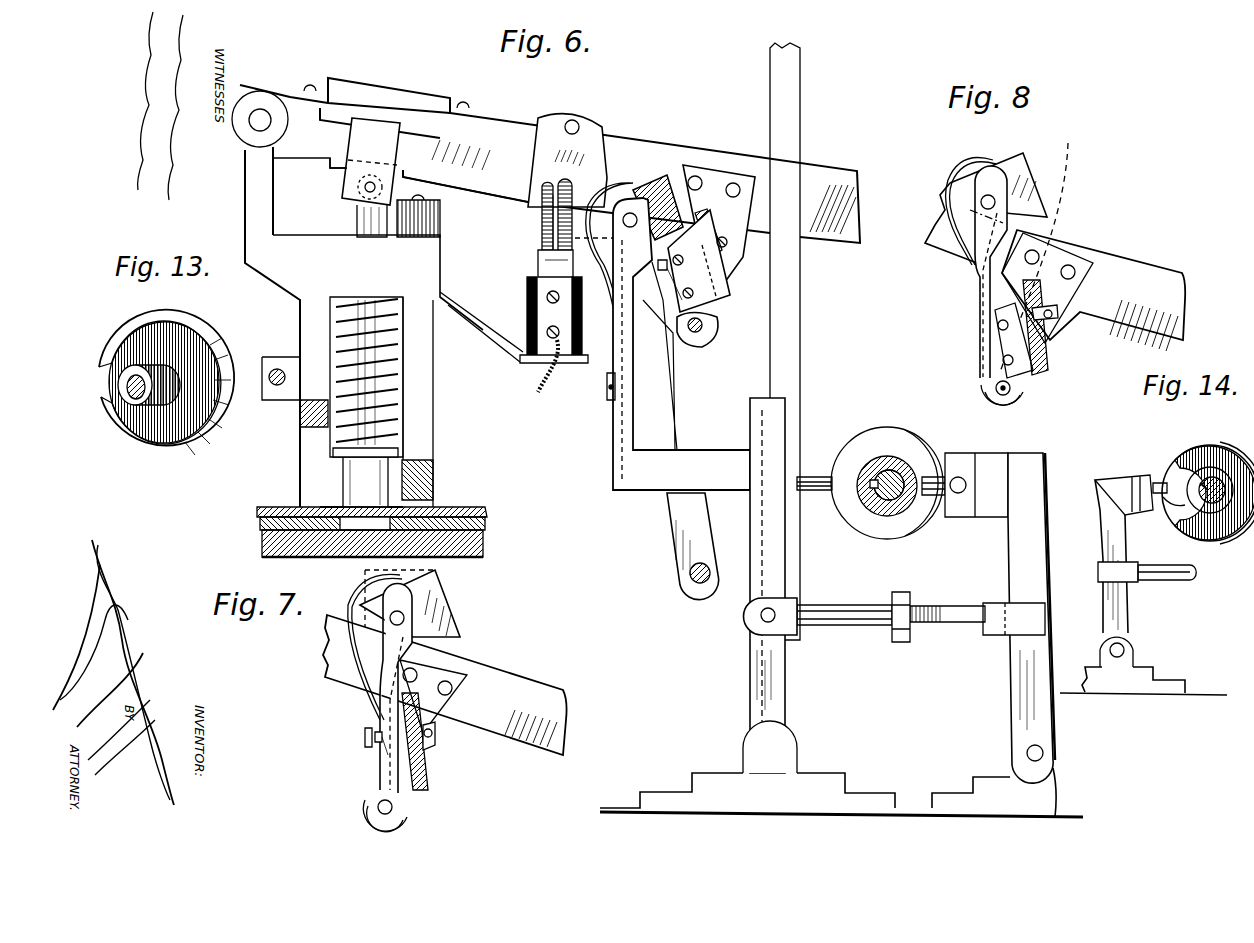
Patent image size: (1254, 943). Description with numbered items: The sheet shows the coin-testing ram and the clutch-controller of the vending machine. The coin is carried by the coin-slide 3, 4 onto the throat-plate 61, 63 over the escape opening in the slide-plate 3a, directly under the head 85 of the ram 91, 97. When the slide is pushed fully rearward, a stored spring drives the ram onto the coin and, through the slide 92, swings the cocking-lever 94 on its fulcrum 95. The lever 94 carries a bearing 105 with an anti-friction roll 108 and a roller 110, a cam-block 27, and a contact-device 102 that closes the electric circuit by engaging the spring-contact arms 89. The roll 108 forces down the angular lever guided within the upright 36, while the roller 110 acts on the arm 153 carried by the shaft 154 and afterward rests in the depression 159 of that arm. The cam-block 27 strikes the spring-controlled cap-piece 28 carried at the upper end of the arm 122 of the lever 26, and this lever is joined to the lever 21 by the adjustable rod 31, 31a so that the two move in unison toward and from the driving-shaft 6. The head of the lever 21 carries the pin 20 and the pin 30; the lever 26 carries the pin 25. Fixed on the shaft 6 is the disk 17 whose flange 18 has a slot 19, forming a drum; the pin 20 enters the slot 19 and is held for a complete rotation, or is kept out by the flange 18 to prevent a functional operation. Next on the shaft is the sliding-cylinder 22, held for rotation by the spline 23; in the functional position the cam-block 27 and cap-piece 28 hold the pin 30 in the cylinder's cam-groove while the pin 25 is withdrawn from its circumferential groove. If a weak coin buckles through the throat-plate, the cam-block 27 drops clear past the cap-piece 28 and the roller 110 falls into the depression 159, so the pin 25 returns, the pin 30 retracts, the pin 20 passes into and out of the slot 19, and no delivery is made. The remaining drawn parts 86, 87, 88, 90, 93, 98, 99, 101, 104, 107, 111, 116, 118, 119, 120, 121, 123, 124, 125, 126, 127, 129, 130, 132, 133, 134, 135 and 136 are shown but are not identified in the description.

In FIG. 6, the coin-slide 3 is at (486, 524).
In FIG. 6, the slide-plate 3a is at (484, 548).
In FIG. 6, the coin-slide 4 is at (470, 508).
In FIG. 6, the driving-shaft 6 is at (890, 500).
In FIG. 14, the driving-shaft 6 is at (1215, 502).
In FIG. 13, the driving-shaft 6 is at (132, 393).
In FIG. 14, the disk 17 is at (1185, 452).
In FIG. 13, the disk 17 is at (150, 428).
In FIG. 14, the flange 18 is at (1222, 443).
In FIG. 13, the flange 18 is at (156, 452).
In FIG. 14, the slot 19 is at (1168, 510).
In FIG. 13, the slot 19 is at (94, 387).
In FIG. 6, the pin 20 is at (958, 477).
In FIG. 14, the pin 20 is at (1140, 474).
In FIG. 6, the lever 21 is at (1012, 688).
In FIG. 14, the lever 21 is at (1128, 628).
In FIG. 6, the sliding-cylinder 22 is at (873, 430).
In FIG. 14, the spline 23 is at (1200, 492).
In FIG. 6, the pin 25 is at (814, 470).
In FIG. 6, the lever 26 is at (780, 575).
In FIG. 6, the cam-block 27 is at (732, 290).
In FIG. 7, the cam-block 27 is at (430, 788).
In FIG. 6, the cap-piece 28 is at (648, 180).
In FIG. 7, the cap-piece 28 is at (452, 618).
In FIG. 6, the pin 30 is at (932, 495).
In FIG. 14, the pin 30 is at (1160, 490).
In FIG. 6, the adjustable rod 31 is at (958, 620).
In FIG. 14, the adjustable rod 31 is at (1195, 577).
In FIG. 6, the adjustable connection 31a is at (868, 620).
In FIG. 6, the upright 36 is at (810, 322).
In FIG. 6, the throat-plate 61 is at (318, 505).
In FIG. 6, the throat-plate 63 is at (363, 568).
In FIG. 6, the head of the ram 85 is at (360, 473).
In FIG. 6, the plate 86 is at (397, 332).
In FIG. 6, the arm 87 is at (246, 192).
In FIG. 6, the housing 88 is at (527, 290).
In FIG. 6, the spring-contact arms 89 is at (542, 226).
In FIG. 6, the screws 90 is at (552, 314).
In FIG. 6, the ram 91 is at (357, 222).
In FIG. 6, the slide 92 is at (350, 143).
In FIG. 6, the recess 93 is at (342, 165).
In FIG. 6, the lever 94 is at (738, 162).
In FIG. 7, the lever 94 is at (445, 685).
In FIG. 6, the fulcrum 95 is at (262, 108).
In FIG. 6, the ram 97 is at (452, 214).
In FIG. 6, the bar 98 is at (392, 76).
In FIG. 6, the rivets 99 is at (310, 84).
In FIG. 6, the pin 101 is at (364, 189).
In FIG. 6, the contact-device 102 is at (528, 150).
In FIG. 6, the tab 104 is at (582, 108).
In FIG. 6, the bearing 105 is at (694, 175).
In FIG. 7, the bearing 105 is at (452, 684).
In FIG. 6, the pivot 107 is at (696, 333).
In FIG. 8, the pivot 107 is at (1005, 395).
In FIG. 8, the anti-friction roll 108 is at (1016, 399).
In FIG. 7, the anti-friction roll 108 is at (408, 812).
In FIG. 6, the roller 110 is at (715, 338).
In FIG. 6, the link 111 is at (715, 305).
In FIG. 7, the link 111 is at (382, 752).
In FIG. 6, the clip 116 is at (660, 272).
In FIG. 7, the clip 116 is at (364, 736).
In FIG. 6, the strip 118 is at (708, 229).
In FIG. 7, the strip 118 is at (430, 772).
In FIG. 6, the lever arm 119 is at (721, 184).
In FIG. 7, the lever arm 119 is at (380, 700).
In FIG. 6, the pivot 120 is at (640, 220).
In FIG. 6, the slot 121 is at (630, 235).
In FIG. 6, the arm 122 is at (616, 432).
In FIG. 6, the pivot 123 is at (778, 748).
In FIG. 6, the base 124 is at (841, 795).
In FIG. 6, the chain 125 is at (610, 275).
In FIG. 6, the stop 126 is at (606, 393).
In FIG. 6, the surface 127 is at (603, 170).
In FIG. 6, the pin 129 is at (628, 256).
In FIG. 6, the block 130 is at (750, 622).
In FIG. 6, the nut 132 is at (898, 642).
In FIG. 6, the pin 133 is at (1025, 616).
In FIG. 14, the pin 133 is at (1112, 570).
In FIG. 6, the block 134 is at (1012, 625).
In FIG. 14, the block 134 is at (1102, 580).
In FIG. 6, the pivot 135 is at (1045, 755).
In FIG. 14, the pivot 135 is at (1109, 652).
In FIG. 6, the base 136 is at (994, 792).
In FIG. 14, the base 136 is at (1156, 676).
In FIG. 6, the arm 153 is at (672, 522).
In FIG. 6, the shaft 154 is at (690, 583).
In FIG. 6, the depression 159 is at (688, 356).